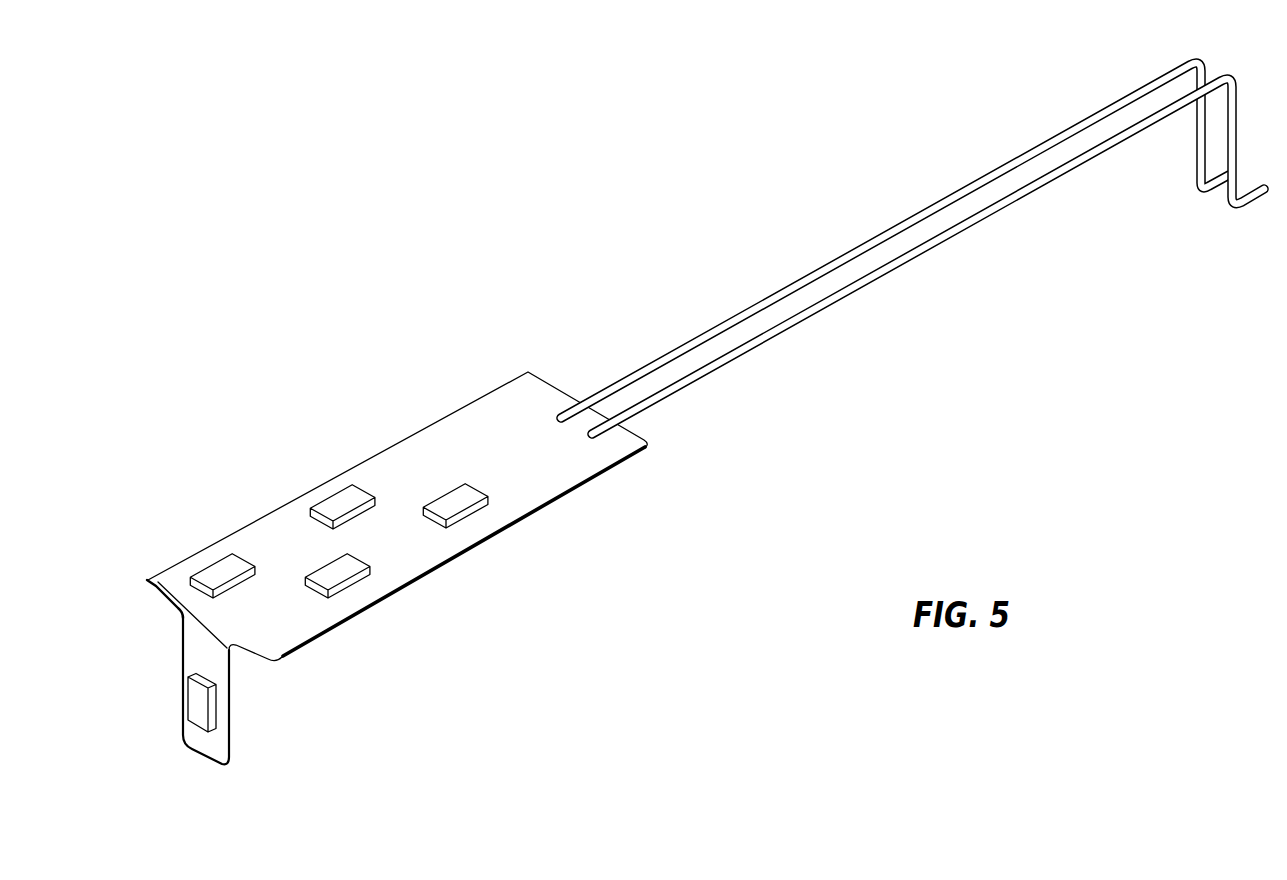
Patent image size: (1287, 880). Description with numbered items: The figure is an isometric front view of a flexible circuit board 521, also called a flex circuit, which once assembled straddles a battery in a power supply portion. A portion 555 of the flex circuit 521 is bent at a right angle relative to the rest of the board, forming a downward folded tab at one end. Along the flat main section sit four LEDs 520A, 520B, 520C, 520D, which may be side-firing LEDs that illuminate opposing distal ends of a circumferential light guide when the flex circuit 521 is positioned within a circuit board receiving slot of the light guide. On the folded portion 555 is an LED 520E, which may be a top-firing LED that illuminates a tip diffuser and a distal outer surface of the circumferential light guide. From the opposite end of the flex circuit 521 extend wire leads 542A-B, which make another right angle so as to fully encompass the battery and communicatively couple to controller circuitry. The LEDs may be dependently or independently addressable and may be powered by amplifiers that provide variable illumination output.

The flexible circuit board 521 is at (519, 396).
The portion of the flex circuit 555 is at (208, 623).
The LED 520A is at (457, 502).
The LED 520B is at (337, 567).
The LED 520C is at (337, 502).
The LED 520D is at (218, 571).
The LED 520E is at (197, 710).
The wire leads 542A-B is at (1022, 150).